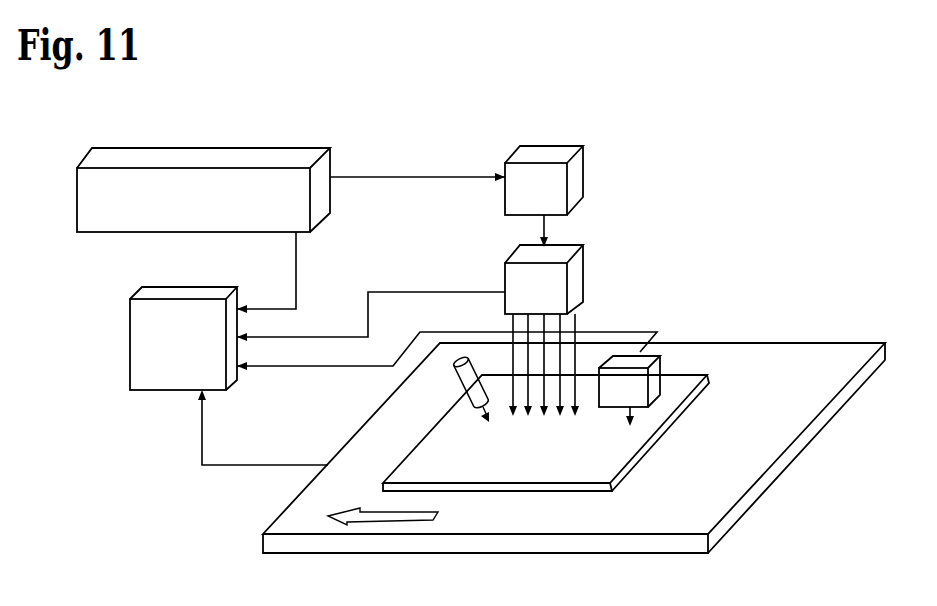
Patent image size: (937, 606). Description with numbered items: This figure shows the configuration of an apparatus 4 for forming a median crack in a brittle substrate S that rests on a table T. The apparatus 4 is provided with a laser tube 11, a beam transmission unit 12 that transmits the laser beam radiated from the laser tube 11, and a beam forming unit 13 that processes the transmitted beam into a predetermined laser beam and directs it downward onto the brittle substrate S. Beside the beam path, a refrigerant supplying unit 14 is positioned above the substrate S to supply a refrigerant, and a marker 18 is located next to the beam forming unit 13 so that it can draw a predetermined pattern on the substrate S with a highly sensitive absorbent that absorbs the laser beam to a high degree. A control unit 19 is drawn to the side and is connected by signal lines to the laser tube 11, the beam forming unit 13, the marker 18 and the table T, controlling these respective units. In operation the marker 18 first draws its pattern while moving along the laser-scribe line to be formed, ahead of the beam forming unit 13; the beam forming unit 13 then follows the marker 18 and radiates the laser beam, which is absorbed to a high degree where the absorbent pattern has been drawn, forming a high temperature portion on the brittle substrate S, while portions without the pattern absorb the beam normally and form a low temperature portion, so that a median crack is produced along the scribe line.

The apparatus for forming a median crack 4 is at (700, 124).
The laser tube 11 is at (218, 160).
The beam transmission unit 12 is at (553, 150).
The beam forming unit 13 is at (578, 273).
The refrigerant supplying unit 14 is at (458, 360).
The marker 18 is at (632, 352).
The controller 19 is at (167, 380).
The brittle substrate S is at (675, 385).
The table T is at (788, 341).